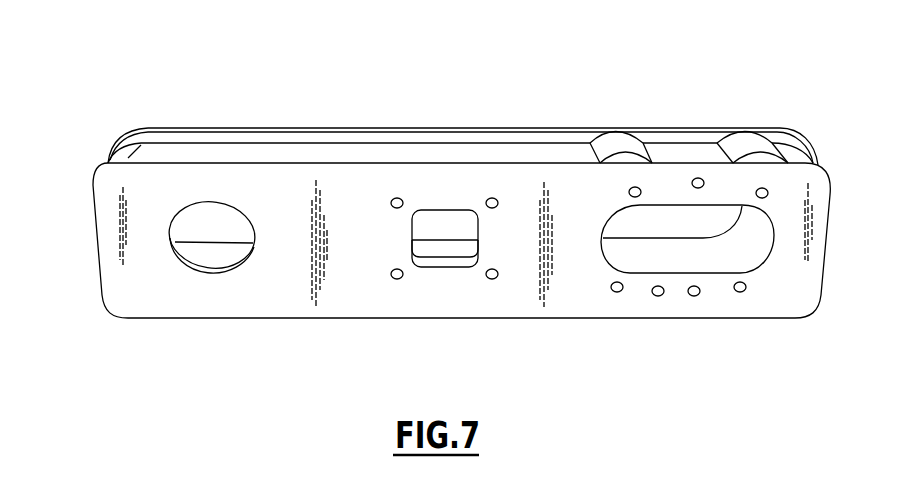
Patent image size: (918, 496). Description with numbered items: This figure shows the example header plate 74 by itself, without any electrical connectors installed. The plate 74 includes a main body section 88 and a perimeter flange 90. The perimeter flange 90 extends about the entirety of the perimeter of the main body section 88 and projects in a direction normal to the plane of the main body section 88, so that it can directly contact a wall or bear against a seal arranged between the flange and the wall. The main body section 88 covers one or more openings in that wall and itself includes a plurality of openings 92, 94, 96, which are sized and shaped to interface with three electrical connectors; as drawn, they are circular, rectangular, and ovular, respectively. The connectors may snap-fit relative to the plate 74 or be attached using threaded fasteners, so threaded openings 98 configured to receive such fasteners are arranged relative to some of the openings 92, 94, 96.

The plate 74 is at (461, 209).
The main body section 88 is at (358, 220).
The perimeter flange 90 is at (405, 155).
The opening 92 is at (198, 268).
The opening 94 is at (452, 262).
The opening 96 is at (722, 270).
The threaded openings 98 is at (396, 279).